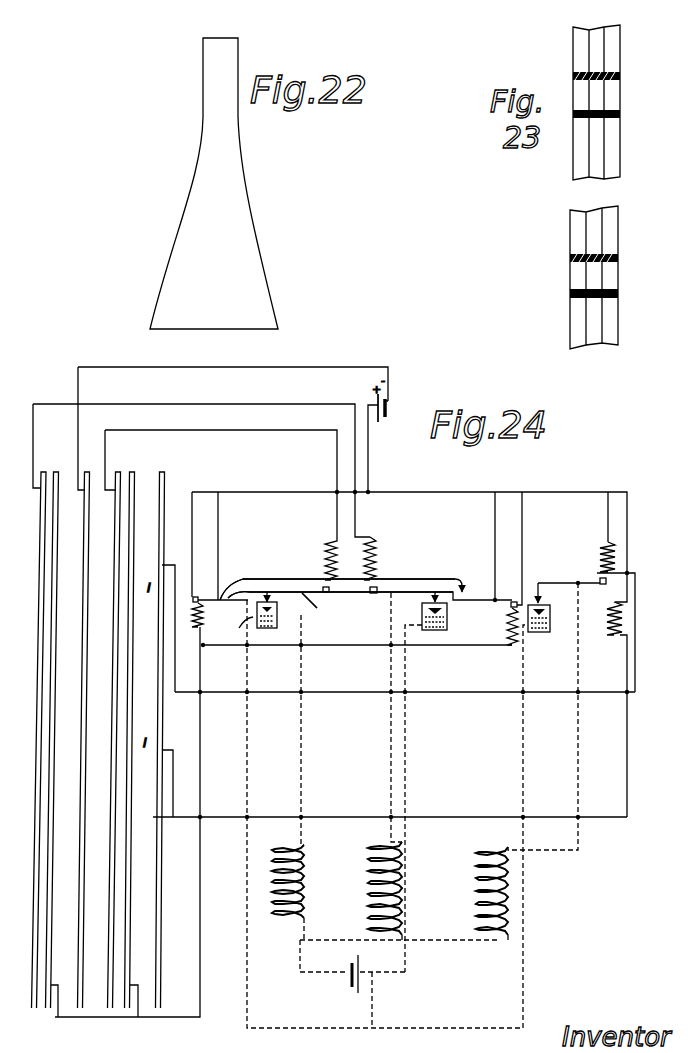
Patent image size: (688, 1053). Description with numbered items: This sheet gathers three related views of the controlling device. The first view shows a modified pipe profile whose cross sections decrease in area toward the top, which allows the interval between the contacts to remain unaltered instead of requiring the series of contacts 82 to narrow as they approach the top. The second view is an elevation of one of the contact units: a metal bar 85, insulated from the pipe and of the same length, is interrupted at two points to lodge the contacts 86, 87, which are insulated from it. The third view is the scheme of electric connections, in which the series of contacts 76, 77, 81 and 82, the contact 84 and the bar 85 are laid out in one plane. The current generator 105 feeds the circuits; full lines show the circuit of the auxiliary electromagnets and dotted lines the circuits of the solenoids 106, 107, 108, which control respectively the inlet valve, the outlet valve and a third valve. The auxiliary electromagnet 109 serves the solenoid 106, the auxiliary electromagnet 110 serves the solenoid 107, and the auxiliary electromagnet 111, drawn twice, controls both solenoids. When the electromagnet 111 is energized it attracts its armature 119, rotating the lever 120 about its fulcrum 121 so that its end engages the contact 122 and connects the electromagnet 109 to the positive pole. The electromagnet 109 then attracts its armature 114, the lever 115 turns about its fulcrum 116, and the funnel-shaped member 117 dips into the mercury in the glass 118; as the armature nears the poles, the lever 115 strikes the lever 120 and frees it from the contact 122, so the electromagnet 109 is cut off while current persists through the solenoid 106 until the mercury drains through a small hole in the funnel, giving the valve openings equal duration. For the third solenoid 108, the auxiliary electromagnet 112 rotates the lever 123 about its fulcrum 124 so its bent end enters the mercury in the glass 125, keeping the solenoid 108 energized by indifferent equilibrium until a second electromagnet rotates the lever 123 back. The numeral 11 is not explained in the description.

In FIG. 24, the contacts 76 is at (128, 461).
In FIG. 24, the contacts 77 is at (135, 473).
In FIG. 24, the contacts 81 is at (52, 466).
In FIG. 24, the contacts 82 is at (57, 473).
In FIG. 24, the contact 84 is at (98, 463).
In FIG. 24, the metal bar 85 is at (164, 472).
In FIG. 23, the contact 86 is at (620, 98).
In FIG. 24, the contact 86 is at (174, 602).
In FIG. 23, the contact 87 is at (618, 278).
In FIG. 24, the contact 87 is at (160, 817).
In FIG. 24, the current generator 105 is at (360, 699).
In FIG. 24, the solenoid 106 is at (305, 880).
In FIG. 24, the solenoid 107 is at (401, 888).
In FIG. 24, the solenoid 108 is at (489, 885).
In FIG. 24, the auxiliary electromagnet 109 is at (320, 550).
In FIG. 24, the auxiliary electromagnet 110 is at (380, 550).
In FIG. 24, the auxiliary electromagnet 111 is at (215, 615).
In FIG. 24, the auxiliary electromagnet 112 is at (604, 547).
In FIG. 24, the armature 114 is at (368, 593).
In FIG. 24, the lever 115 is at (279, 610).
In FIG. 24, the fulcrum 116 is at (325, 607).
In FIG. 24, the funnel-shaped member 117 is at (233, 630).
In FIG. 24, the glass 118 is at (267, 629).
In FIG. 24, the armature 119 is at (515, 601).
In FIG. 24, the lever 120 is at (479, 605).
In FIG. 24, the fulcrum 121 is at (498, 598).
In FIG. 24, the contact 122 is at (464, 593).
In FIG. 24, the lever 123 is at (554, 586).
In FIG. 24, the fulcrum 124 is at (551, 610).
In FIG. 24, the glass 125 is at (542, 632).
In FIG. 24, the conductor 11 is at (485, 639).